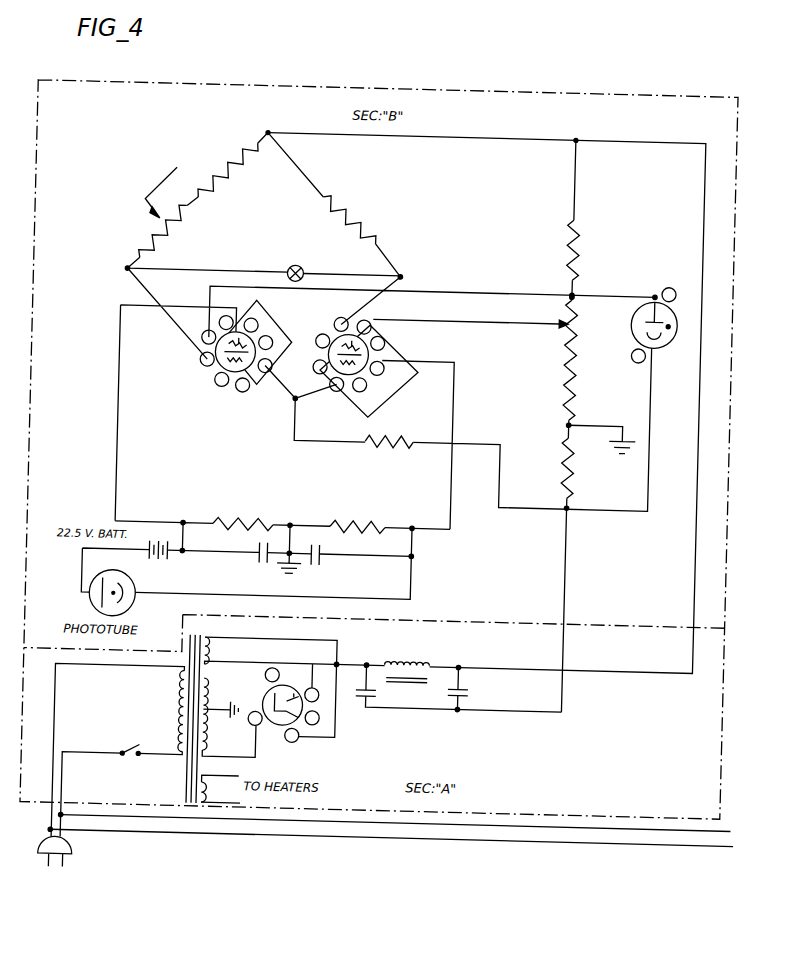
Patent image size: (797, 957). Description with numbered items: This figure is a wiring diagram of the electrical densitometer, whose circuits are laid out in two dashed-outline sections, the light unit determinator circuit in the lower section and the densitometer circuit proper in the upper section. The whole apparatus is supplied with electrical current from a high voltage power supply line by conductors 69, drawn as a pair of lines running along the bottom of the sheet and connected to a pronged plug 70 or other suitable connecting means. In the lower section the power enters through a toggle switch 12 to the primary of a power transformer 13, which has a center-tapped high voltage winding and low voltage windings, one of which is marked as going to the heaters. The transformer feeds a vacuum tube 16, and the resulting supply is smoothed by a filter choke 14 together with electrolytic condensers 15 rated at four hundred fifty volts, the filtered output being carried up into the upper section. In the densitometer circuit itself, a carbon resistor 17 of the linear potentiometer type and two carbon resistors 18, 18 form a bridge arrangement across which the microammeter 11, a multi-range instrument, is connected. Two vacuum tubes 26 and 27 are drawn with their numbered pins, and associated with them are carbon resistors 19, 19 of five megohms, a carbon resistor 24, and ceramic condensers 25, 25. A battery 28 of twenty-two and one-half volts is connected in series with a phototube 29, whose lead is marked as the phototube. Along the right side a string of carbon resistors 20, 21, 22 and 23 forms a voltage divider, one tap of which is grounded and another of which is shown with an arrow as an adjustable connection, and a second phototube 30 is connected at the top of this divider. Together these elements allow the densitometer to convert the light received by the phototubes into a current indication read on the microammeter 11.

The microammeter 11 is at (290, 268).
The toggle switch 12 is at (132, 749).
The power transformer 13 is at (176, 712).
The filter choke 14 is at (417, 660).
The electrolytic condensers 15 is at (363, 703).
The vacuum tube 16 is at (291, 734).
The carbon resistor 17 is at (187, 213).
The carbon resistors 18 is at (215, 167).
The carbon resistors 19 is at (240, 522).
The carbon resistor 20 is at (557, 240).
The carbon resistor 21 is at (557, 336).
The carbon resistor 22 is at (560, 386).
The carbon resistor 23 is at (563, 458).
The carbon resistor 24 is at (405, 442).
The ceramic condensers 25 is at (261, 571).
The vacuum tube 26 is at (231, 394).
The vacuum tube 27 is at (331, 329).
The battery 28 is at (168, 566).
The phototube 29 is at (92, 606).
The phototube 30 is at (657, 343).
The conductors 69 is at (357, 826).
The pronged plug 70 is at (54, 856).